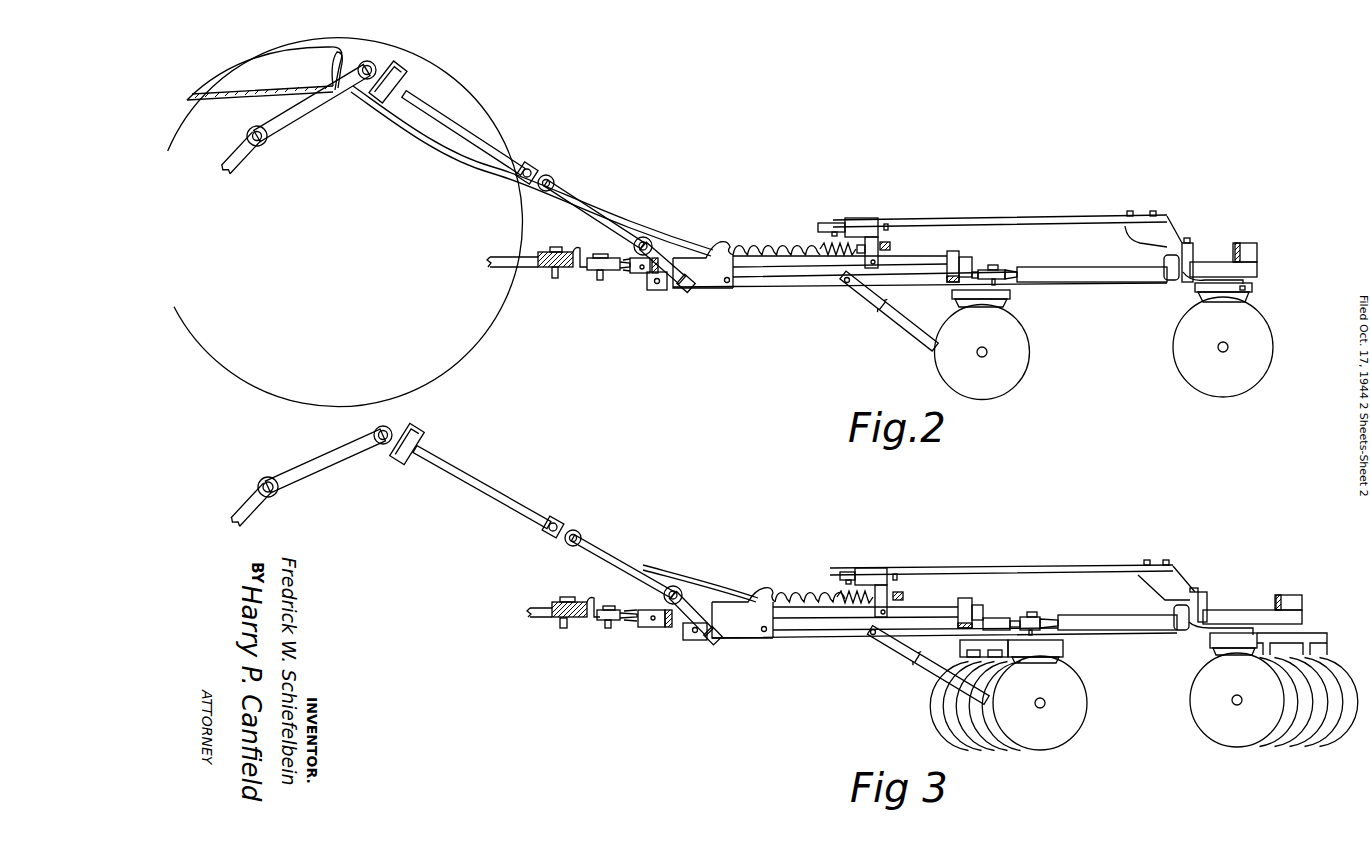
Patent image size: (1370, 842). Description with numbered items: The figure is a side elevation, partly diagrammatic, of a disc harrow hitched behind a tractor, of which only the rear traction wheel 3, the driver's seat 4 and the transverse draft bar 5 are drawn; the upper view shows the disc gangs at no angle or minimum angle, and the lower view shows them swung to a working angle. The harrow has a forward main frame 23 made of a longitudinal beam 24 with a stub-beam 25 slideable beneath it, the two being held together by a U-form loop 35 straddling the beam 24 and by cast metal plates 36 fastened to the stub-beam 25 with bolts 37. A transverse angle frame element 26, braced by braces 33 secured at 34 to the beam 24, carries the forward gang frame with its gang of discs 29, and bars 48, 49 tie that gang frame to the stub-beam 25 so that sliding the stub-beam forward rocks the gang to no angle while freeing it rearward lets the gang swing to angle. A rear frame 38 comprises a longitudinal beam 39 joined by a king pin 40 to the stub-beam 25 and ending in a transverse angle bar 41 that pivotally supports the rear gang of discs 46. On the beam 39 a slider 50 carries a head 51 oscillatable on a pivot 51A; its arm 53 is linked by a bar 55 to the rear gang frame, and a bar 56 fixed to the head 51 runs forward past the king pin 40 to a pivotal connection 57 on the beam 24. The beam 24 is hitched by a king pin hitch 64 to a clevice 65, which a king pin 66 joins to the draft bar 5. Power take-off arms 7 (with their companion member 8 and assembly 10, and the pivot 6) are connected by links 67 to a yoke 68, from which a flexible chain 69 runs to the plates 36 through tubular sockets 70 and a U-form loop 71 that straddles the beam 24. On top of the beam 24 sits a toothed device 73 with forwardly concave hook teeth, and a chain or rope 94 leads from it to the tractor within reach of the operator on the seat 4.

In FIG. 2, the rearward or traction wheels 3 is at (470, 95).
In FIG. 2, the driver's seat 4 is at (214, 71).
In FIG. 2, the transverse draft bar 5 is at (533, 268).
In FIG. 3, the transverse draft bar 5 is at (538, 619).
In FIG. 2, the pivot pin 6 is at (246, 137).
In FIG. 3, the pivot pin 6 is at (257, 489).
In FIG. 2, the arms of the auxiliary power take-off 7 is at (297, 121).
In FIG. 3, the arms of the auxiliary power take-off 7 is at (321, 473).
In FIG. 2, the rocker arm 8 is at (246, 168).
In FIG. 3, the rocker arm 8 is at (260, 516).
In FIG. 3, the implement 10 is at (486, 455).
In FIG. 2, the forward main frame 23 is at (898, 294).
In FIG. 3, the forward main frame 23 is at (930, 652).
In FIG. 2, the longitudinal beam 24 is at (918, 256).
In FIG. 3, the longitudinal beam 24 is at (935, 607).
In FIG. 2, the stub-beam 25 is at (915, 278).
In FIG. 3, the stub-beam 25 is at (942, 629).
In FIG. 2, the transverse angle frame element 26 is at (883, 253).
In FIG. 3, the transverse angle frame element 26 is at (896, 603).
In FIG. 2, the gang of discs 29 is at (1027, 368).
In FIG. 3, the gang of discs 29 is at (1080, 723).
In FIG. 3, the braces 33 is at (668, 629).
In FIG. 3, the brace securing point 34 is at (652, 628).
In FIG. 2, the U-form loop of metal 35 is at (955, 253).
In FIG. 3, the U-form loop of metal 35 is at (970, 601).
In FIG. 2, the cast metal plates 36 is at (718, 281).
In FIG. 3, the cast metal plates 36 is at (745, 639).
In FIG. 2, the bolts 37 is at (657, 291).
In FIG. 3, the bolts 37 is at (695, 641).
In FIG. 2, the rear frame 38 is at (1106, 331).
In FIG. 3, the rear frame 38 is at (1141, 679).
In FIG. 2, the longitudinal beam 39 is at (1108, 270).
In FIG. 3, the longitudinal beam 39 is at (1118, 618).
In FIG. 2, the king pin 40 is at (1002, 265).
In FIG. 3, the king pin 40 is at (1040, 612).
In FIG. 2, the transverse angle bar 41 is at (1240, 254).
In FIG. 3, the transverse angle bar 41 is at (1280, 599).
In FIG. 2, the gang of discs 46 is at (1273, 353).
In FIG. 3, the gang of discs 46 is at (1192, 717).
In FIG. 2, the bar or tie member 48 is at (907, 328).
In FIG. 3, the bar or tie member 48 is at (925, 668).
In FIG. 2, the bar or tie member 49 is at (868, 303).
In FIG. 3, the bar or tie member 49 is at (888, 649).
In FIG. 2, the slider 50 is at (1170, 279).
In FIG. 3, the slider 50 is at (1177, 628).
In FIG. 2, the head 51 is at (1192, 251).
In FIG. 3, the head 51 is at (1203, 595).
In FIG. 3, the pivot 51A is at (1196, 588).
In FIG. 2, the arm 53 is at (1177, 279).
In FIG. 3, the arm 53 is at (1188, 630).
In FIG. 2, the bar 55 is at (1198, 266).
In FIG. 3, the bar 55 is at (1223, 620).
In FIG. 2, the bar 56 is at (1077, 221).
In FIG. 3, the bar 56 is at (1095, 566).
In FIG. 2, the pivotal connection 57 is at (870, 215).
In FIG. 3, the pivotal connection 57 is at (882, 565).
In FIG. 2, the king pin type of hitch 64 is at (600, 257).
In FIG. 3, the king pin type of hitch 64 is at (610, 609).
In FIG. 2, the clevice 65 is at (578, 250).
In FIG. 3, the clevice 65 is at (590, 600).
In FIG. 2, the king pin 66 is at (560, 251).
In FIG. 3, the king pin 66 is at (567, 601).
In FIG. 2, the links or bars 67 is at (453, 124).
In FIG. 3, the links or bars 67 is at (470, 500).
In FIG. 2, the yoke 68 is at (540, 171).
In FIG. 3, the yoke 68 is at (560, 523).
In FIG. 2, the link or flexible chain 69 is at (572, 195).
In FIG. 3, the link or flexible chain 69 is at (598, 556).
In FIG. 2, the tubular sockets 70 is at (667, 266).
In FIG. 3, the tubular sockets 70 is at (713, 631).
In FIG. 2, the U-form loop 71 is at (648, 252).
In FIG. 3, the U-form loop 71 is at (681, 604).
In FIG. 2, the device 73 is at (780, 239).
In FIG. 3, the device 73 is at (802, 585).
In FIG. 2, the chain or rope 94 is at (434, 151).
In FIG. 3, the chain or rope 94 is at (668, 572).